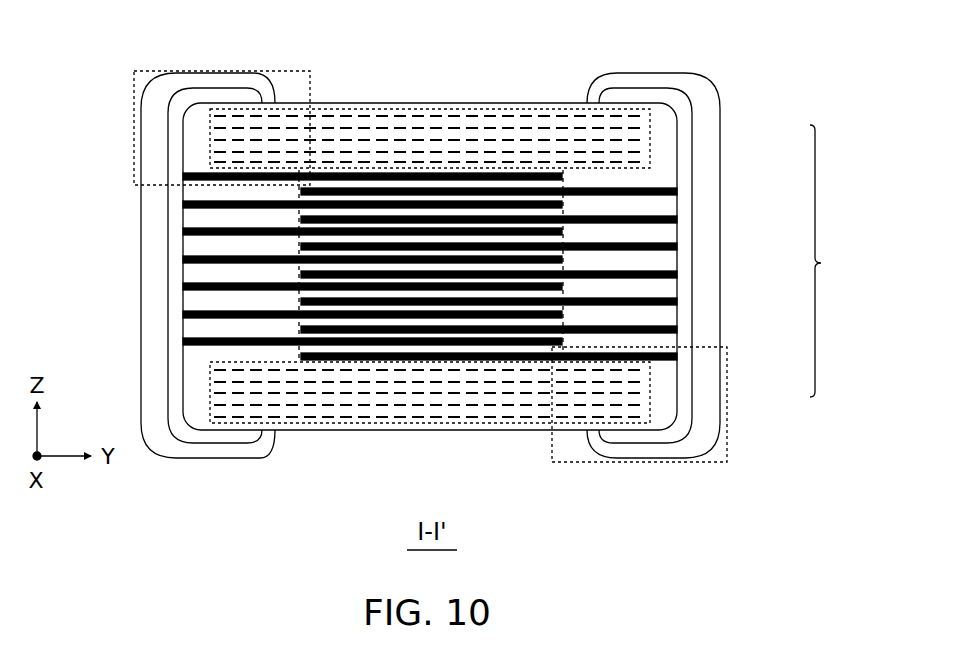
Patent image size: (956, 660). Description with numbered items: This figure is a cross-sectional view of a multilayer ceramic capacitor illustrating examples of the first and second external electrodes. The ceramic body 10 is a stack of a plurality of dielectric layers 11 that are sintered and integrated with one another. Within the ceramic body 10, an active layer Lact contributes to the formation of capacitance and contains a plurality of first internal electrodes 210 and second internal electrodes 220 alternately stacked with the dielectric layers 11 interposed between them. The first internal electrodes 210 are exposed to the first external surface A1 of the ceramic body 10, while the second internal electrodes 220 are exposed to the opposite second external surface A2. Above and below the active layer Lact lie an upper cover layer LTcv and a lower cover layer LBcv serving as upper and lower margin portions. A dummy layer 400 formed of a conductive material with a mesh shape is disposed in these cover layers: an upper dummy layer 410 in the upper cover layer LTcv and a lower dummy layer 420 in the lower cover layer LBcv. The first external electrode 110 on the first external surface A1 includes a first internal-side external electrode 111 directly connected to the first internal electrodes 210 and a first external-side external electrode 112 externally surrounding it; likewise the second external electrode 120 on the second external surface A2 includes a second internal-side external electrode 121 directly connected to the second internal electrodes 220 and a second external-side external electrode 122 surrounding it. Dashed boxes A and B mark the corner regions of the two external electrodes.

The ceramic body 10 is at (433, 101).
The dielectric layer 11 is at (360, 183).
The first external electrode 110 is at (208, 324).
The first internal-side external electrode 111 is at (210, 438).
The first external-side external electrode 112 is at (180, 452).
The second external electrode 120 is at (653, 324).
The second internal-side external electrode 121 is at (708, 531).
The second external-side external electrode 122 is at (678, 450).
The first internal electrode 210 is at (200, 177).
The second internal electrode 220 is at (665, 190).
The dummy layer 400 is at (839, 261).
The upper dummy layer 410 is at (648, 137).
The lower dummy layer 420 is at (648, 388).
The region A is at (159, 70).
The region B is at (700, 460).
The first external surface A1 is at (183, 240).
The second external surface A2 is at (678, 243).
The active layer Lact is at (299, 275).
The upper cover layer LTcv is at (491, 108).
The lower cover layer LBcv is at (490, 425).